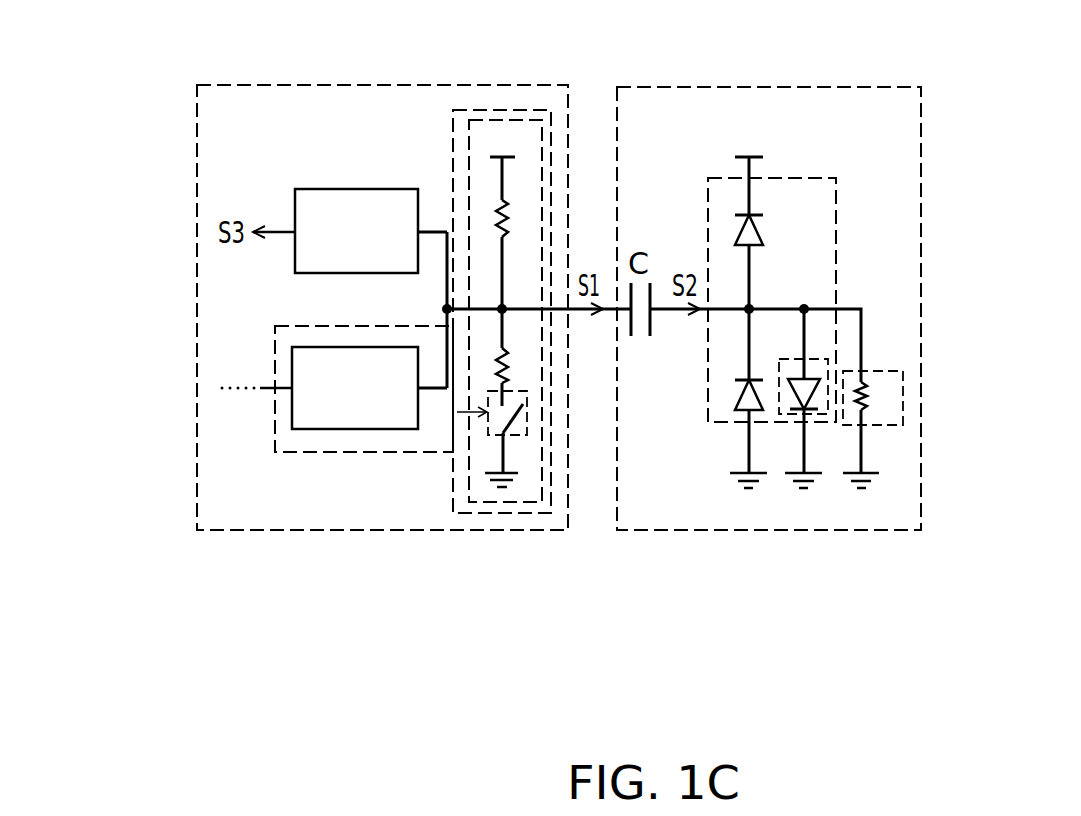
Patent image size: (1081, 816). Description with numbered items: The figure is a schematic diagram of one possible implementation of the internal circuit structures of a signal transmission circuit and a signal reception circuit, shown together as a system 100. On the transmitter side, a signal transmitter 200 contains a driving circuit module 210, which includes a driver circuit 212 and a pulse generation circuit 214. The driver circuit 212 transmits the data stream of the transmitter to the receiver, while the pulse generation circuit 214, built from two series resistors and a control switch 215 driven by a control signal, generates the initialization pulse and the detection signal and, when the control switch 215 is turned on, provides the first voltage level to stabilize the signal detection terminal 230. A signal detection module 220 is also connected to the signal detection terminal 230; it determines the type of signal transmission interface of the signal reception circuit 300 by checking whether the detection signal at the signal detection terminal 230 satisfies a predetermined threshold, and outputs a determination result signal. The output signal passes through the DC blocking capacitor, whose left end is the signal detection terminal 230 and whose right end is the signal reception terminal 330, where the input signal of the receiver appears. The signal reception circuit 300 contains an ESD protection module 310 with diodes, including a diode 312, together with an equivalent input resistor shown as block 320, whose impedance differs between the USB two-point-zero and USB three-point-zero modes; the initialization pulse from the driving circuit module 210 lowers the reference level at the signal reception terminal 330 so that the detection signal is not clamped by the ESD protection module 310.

The signal transmission system 100 is at (1045, 692).
The transmitter (TX) 200 is at (243, 533).
The driving circuit module 210 is at (333, 453).
The driver circuit 212 is at (376, 430).
The pulse generation circuit 214 is at (514, 118).
The control switch 215 is at (528, 413).
The signal detection module 220 is at (333, 189).
The signal detection terminal 230 is at (447, 308).
The signal reception circuit 300 is at (718, 532).
The ESD protection module 310 is at (708, 395).
The diode 312 is at (820, 425).
The termination resistor RT 320 is at (903, 383).
The signal reception terminal 330 is at (749, 309).